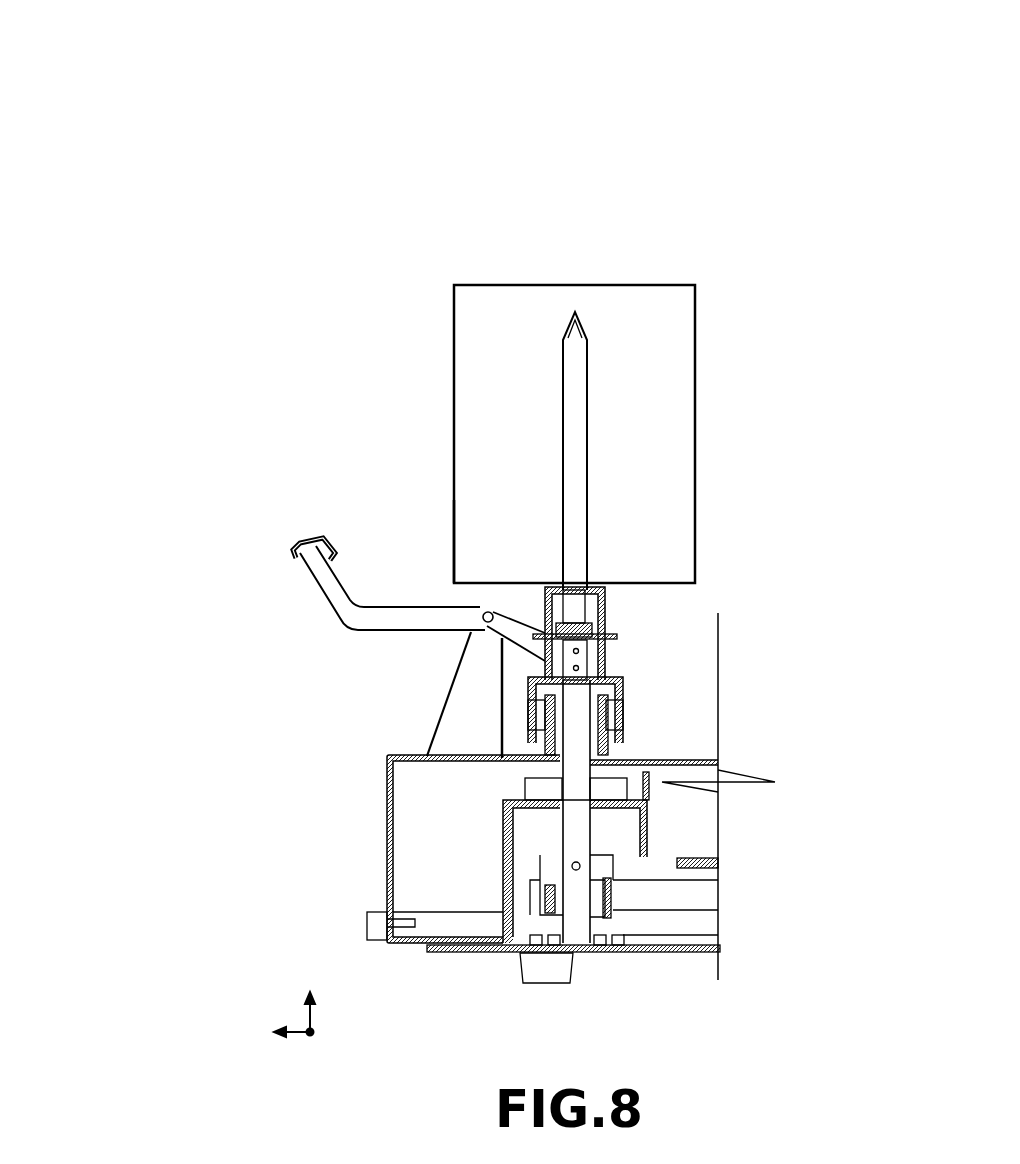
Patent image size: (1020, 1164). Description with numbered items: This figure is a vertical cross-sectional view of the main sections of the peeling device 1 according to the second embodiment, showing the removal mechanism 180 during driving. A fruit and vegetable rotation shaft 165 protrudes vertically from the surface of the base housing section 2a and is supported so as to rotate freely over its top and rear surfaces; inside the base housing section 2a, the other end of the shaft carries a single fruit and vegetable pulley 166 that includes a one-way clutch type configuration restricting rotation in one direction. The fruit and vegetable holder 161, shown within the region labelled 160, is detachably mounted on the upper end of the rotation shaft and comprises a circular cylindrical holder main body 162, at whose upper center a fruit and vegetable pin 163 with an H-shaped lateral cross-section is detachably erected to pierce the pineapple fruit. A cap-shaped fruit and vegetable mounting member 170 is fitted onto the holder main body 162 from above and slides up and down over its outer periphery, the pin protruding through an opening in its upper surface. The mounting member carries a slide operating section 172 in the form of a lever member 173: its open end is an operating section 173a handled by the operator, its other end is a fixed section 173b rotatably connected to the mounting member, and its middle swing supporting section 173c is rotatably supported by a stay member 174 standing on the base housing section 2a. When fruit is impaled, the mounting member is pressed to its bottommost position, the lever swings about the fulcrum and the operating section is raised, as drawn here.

The peeling device 1 is at (380, 170).
The base housing section 2a is at (387, 856).
The nozzle unit housing 160 is at (353, 342).
The fruit and vegetable holder 161 is at (557, 332).
The holder main body 162 is at (605, 660).
The fruit and vegetable pin 163 is at (563, 472).
The fruit and vegetable rotation shaft 165 is at (580, 724).
The fruit and vegetable pulley 166 is at (677, 868).
The fruit and vegetable mounting member 170 is at (550, 518).
The slide operating section 172 is at (288, 598).
The lever member 173 is at (397, 633).
The operating section 173a is at (312, 540).
The fixed section 173b is at (618, 647).
The swing supporting section 173c is at (487, 613).
The stay member 174 is at (485, 747).
The removal mechanism 180 is at (207, 477).